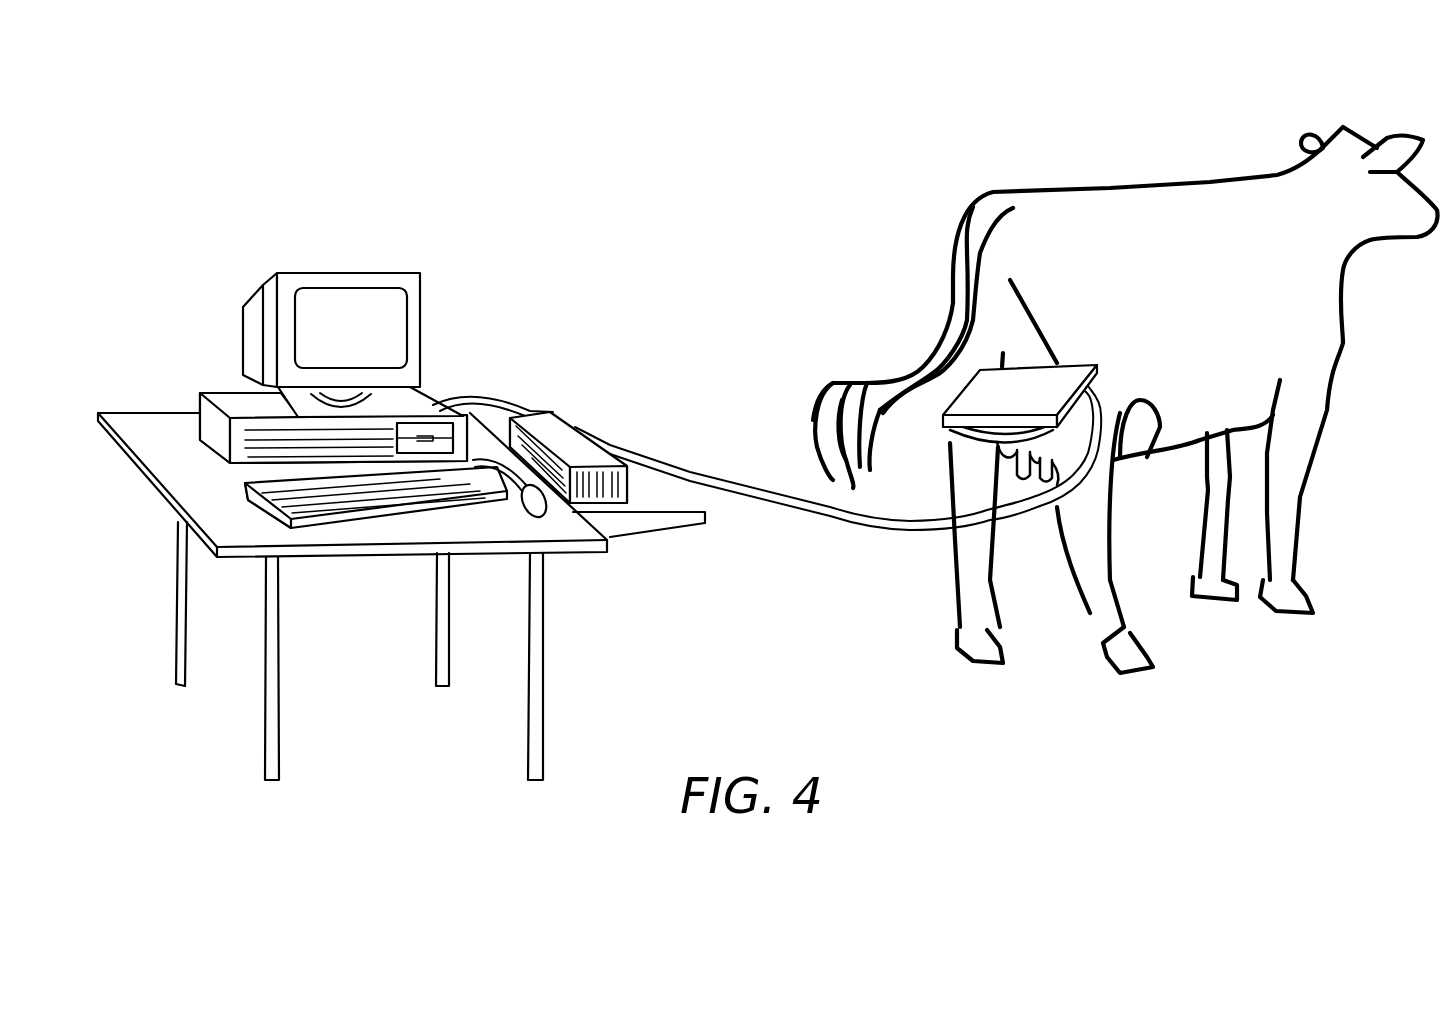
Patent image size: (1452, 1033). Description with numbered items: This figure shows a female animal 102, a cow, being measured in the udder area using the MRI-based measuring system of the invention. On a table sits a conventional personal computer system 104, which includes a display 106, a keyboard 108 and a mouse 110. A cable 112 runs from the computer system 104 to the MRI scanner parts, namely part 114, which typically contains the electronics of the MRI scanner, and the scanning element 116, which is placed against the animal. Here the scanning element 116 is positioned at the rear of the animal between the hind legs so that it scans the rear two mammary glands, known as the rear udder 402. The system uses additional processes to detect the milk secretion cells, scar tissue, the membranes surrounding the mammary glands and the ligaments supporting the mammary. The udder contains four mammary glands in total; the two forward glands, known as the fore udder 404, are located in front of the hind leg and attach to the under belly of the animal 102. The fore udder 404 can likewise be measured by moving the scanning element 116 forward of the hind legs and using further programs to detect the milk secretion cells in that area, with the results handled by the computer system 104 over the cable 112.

The female animal 102 is at (1191, 307).
The computer system 104 is at (235, 403).
The display 106 is at (388, 318).
The keyboard 108 is at (377, 510).
The mouse 110 is at (543, 517).
The cable 112 is at (487, 393).
The MRI scanner part 114 is at (560, 442).
The scanning element 116 is at (973, 397).
The rear udder 402 is at (1000, 462).
The fore udder 404 is at (1153, 430).